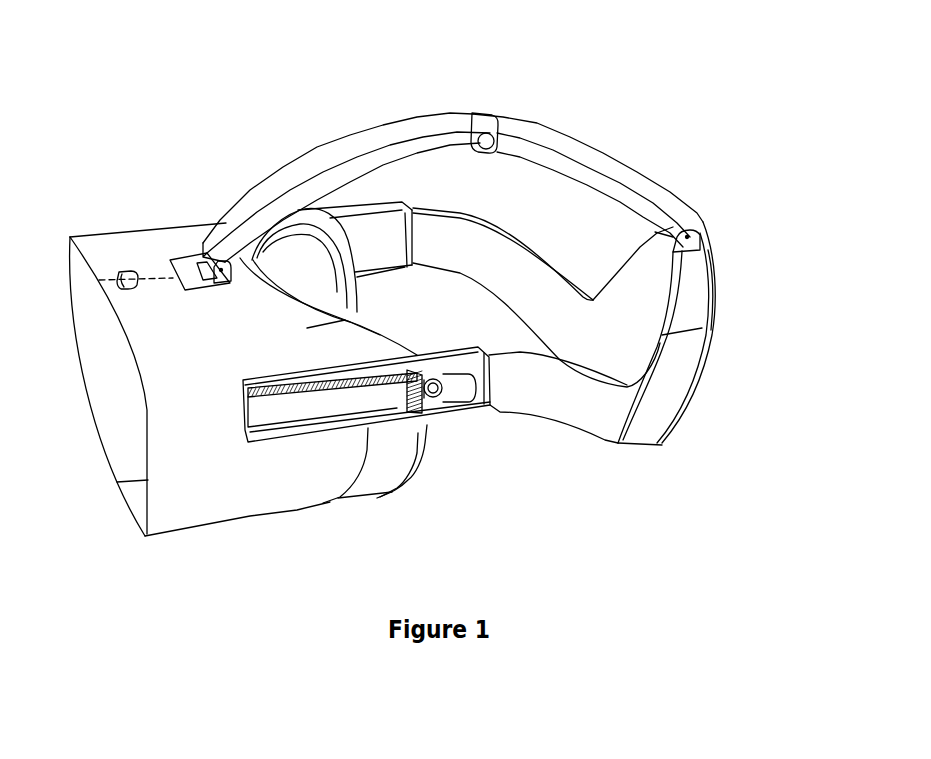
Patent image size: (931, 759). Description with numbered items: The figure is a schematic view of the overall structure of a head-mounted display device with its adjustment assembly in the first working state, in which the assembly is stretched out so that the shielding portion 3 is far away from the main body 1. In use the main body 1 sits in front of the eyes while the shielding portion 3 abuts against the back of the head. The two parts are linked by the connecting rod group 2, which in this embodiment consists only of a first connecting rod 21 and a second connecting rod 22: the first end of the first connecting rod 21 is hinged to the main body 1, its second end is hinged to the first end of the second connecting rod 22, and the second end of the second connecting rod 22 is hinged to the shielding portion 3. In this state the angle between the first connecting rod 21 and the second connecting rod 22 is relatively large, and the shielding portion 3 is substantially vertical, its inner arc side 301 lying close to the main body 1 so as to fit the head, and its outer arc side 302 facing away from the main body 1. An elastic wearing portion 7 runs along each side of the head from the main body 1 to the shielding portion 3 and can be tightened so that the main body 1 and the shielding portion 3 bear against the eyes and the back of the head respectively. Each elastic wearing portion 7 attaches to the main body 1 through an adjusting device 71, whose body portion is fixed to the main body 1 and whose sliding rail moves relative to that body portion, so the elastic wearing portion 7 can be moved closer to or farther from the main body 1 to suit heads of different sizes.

The main body 1 is at (138, 250).
The connecting rod group 2 is at (383, 39).
The first connecting rod 21 is at (367, 128).
The second connecting rod 22 is at (588, 152).
The shielding portion 3 is at (713, 326).
The inner arc side 301 is at (637, 308).
The outer arc side 302 is at (714, 318).
The elastic wearing portion 7 is at (430, 456).
The adjusting device 71 is at (388, 413).